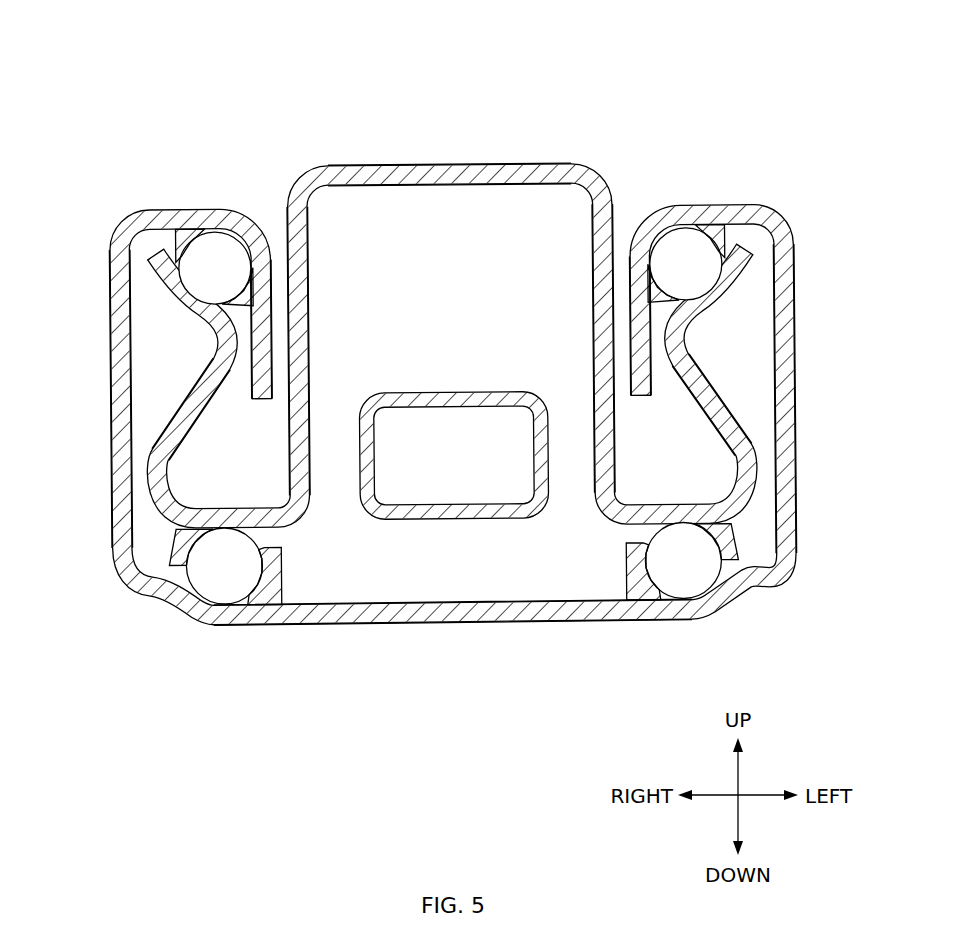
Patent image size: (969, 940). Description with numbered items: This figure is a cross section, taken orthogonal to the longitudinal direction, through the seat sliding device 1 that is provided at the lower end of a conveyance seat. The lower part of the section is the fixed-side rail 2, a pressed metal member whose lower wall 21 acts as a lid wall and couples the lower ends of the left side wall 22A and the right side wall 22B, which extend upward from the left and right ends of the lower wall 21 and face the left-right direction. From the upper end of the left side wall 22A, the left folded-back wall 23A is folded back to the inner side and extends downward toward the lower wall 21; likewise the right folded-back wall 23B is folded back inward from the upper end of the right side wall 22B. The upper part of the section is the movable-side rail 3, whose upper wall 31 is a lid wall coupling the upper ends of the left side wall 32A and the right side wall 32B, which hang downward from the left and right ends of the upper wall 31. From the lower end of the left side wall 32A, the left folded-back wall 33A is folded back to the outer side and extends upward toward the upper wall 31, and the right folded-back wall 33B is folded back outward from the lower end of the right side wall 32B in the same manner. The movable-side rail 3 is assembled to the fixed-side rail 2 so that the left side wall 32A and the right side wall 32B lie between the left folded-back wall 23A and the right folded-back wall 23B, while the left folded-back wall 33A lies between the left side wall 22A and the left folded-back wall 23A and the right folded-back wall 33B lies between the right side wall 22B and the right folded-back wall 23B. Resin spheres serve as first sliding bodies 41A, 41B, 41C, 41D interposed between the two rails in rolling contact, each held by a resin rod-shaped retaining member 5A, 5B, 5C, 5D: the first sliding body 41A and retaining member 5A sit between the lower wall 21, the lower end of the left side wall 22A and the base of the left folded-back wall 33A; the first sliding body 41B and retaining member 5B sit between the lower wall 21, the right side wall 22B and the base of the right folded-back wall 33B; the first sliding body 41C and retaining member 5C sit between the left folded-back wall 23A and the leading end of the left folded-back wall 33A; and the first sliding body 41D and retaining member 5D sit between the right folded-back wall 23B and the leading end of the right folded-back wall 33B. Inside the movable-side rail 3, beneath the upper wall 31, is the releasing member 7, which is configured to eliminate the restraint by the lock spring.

The seat sliding device 1 is at (640, 116).
The fixed-side rail 2 is at (450, 467).
The movable-side rail 3 is at (450, 302).
The retaining member 5A is at (636, 574).
The retaining member 5B is at (273, 578).
The retaining member 5C is at (722, 229).
The retaining member 5D is at (188, 240).
The releasing member 7 is at (449, 398).
The lower wall 21 is at (453, 612).
The left side wall 22A is at (784, 398).
The right side wall 22B is at (120, 399).
The left folded-back wall 23A is at (640, 325).
The right folded-back wall 23B is at (261, 329).
The upper wall 31 is at (449, 174).
The left side wall 32A is at (603, 348).
The right side wall 32B is at (298, 351).
The left folded-back wall 33A is at (712, 404).
The right folded-back wall 33B is at (191, 409).
The first sliding body 41A is at (686, 578).
The first sliding body 41B is at (220, 583).
The first sliding body 41C is at (688, 247).
The first sliding body 41D is at (215, 253).